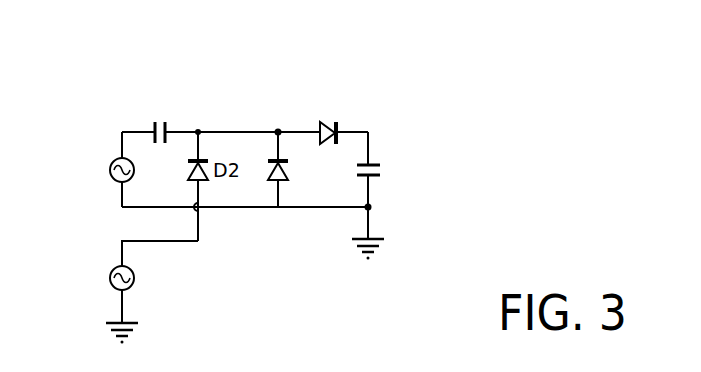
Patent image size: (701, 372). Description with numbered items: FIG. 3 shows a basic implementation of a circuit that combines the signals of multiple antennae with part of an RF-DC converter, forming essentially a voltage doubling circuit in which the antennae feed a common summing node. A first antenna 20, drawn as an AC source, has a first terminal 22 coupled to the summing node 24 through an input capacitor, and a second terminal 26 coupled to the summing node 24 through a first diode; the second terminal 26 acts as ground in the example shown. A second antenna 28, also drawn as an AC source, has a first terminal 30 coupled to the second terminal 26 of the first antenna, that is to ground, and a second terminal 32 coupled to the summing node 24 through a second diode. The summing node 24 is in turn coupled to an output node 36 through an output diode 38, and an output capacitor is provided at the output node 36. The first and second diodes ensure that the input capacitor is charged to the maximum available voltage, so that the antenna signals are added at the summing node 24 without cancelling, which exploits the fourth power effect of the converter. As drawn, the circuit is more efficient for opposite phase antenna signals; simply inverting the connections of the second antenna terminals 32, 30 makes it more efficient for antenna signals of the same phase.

The first antenna 20 is at (109, 172).
The first terminal of the first antenna 22 is at (122, 140).
The summing node 24 is at (279, 126).
The second terminal of the first antenna 26 is at (122, 203).
The second antenna 28 is at (109, 279).
The first terminal of the second antenna 30 is at (122, 311).
The second terminal of the second antenna 32 is at (122, 246).
The output node 36 is at (375, 127).
The output diode 38 is at (328, 122).